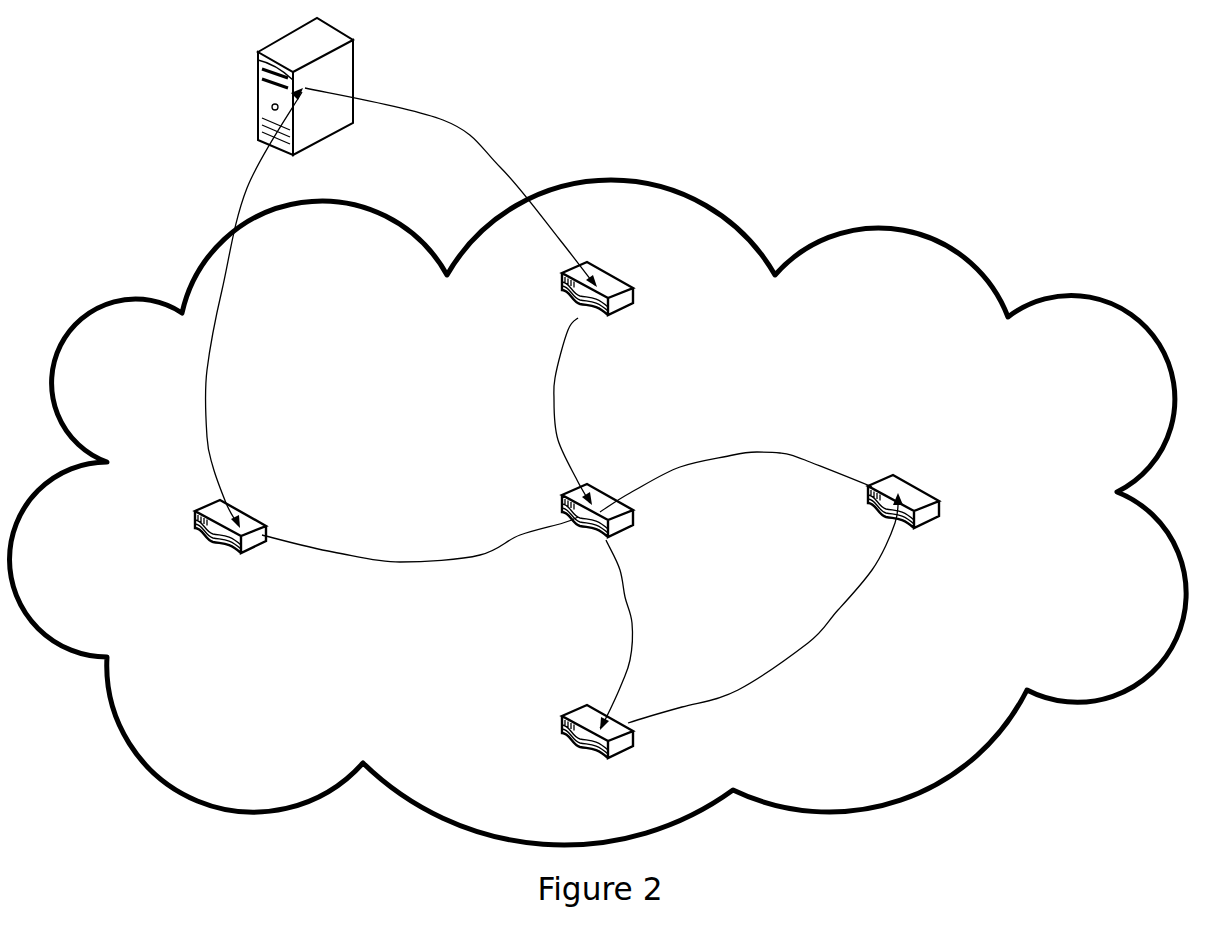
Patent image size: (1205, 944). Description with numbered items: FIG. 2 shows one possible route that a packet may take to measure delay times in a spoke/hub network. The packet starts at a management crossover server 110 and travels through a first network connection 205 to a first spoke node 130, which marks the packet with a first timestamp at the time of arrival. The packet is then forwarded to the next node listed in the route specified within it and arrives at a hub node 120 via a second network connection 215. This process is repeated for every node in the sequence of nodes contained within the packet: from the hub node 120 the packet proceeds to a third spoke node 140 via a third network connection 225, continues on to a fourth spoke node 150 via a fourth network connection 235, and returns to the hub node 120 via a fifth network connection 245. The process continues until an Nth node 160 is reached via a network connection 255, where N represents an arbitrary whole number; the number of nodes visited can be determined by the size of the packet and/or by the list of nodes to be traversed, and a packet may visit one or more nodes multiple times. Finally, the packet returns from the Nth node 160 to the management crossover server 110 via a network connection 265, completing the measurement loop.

The management crossover server 110 is at (258, 68).
The hub node 120 is at (603, 492).
The first spoke node 130 is at (622, 280).
The third spoke node 140 is at (895, 471).
The fourth spoke node 150 is at (632, 750).
The Nth node 160 is at (195, 513).
The first network connection 205 is at (499, 167).
The second network connection 215 is at (554, 378).
The third network connection 225 is at (752, 451).
The fourth network connection 235 is at (808, 645).
The fifth network connection 245 is at (628, 623).
The network connection 255 is at (395, 565).
The network connection 265 is at (222, 292).